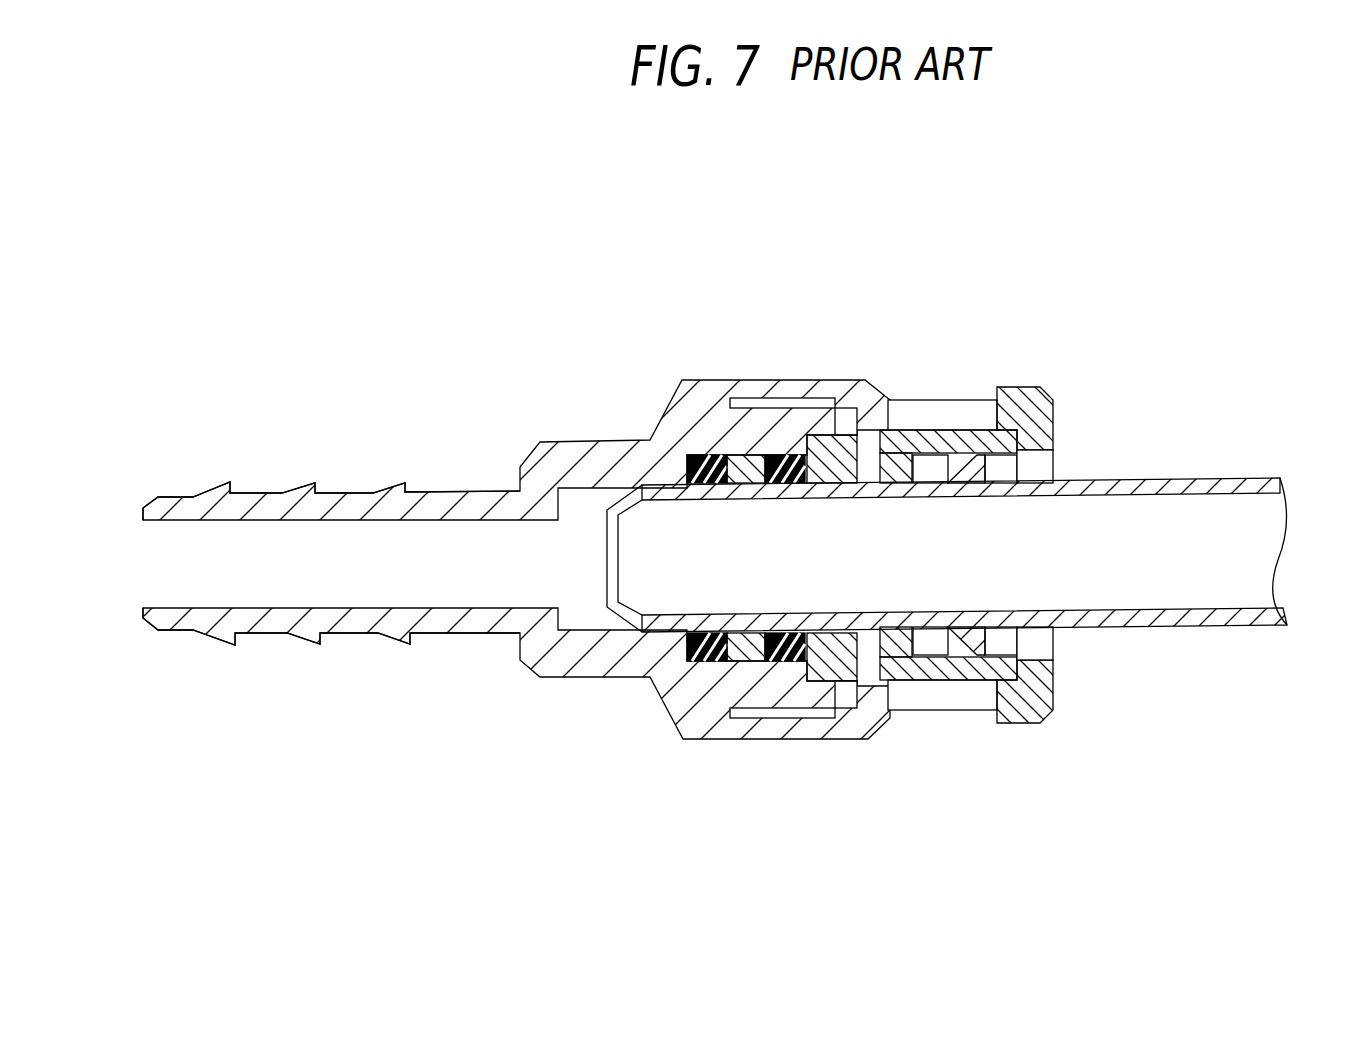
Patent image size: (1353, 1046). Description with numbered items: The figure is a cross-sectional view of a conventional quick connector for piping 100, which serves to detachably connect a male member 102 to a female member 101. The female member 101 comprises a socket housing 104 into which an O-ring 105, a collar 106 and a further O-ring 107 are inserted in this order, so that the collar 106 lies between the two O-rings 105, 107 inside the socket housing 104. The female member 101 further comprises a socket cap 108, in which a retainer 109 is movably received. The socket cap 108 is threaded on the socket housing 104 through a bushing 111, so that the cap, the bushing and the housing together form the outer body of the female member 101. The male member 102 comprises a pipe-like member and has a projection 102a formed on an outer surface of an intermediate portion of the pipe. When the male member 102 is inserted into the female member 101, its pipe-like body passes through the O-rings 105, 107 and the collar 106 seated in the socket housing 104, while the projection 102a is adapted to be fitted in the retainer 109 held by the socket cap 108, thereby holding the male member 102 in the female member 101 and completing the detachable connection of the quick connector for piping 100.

The quick connector for piping 100 is at (328, 205).
The female member 101 is at (562, 388).
The male member 102 is at (964, 603).
The projection 102a is at (935, 647).
The socket housing 104 is at (273, 490).
The O-ring 105 is at (683, 452).
The collar 106 is at (744, 452).
The O-ring 107 is at (784, 452).
The socket cap 108 is at (1023, 387).
The retainer 109 is at (933, 428).
The bushing 111 is at (847, 690).